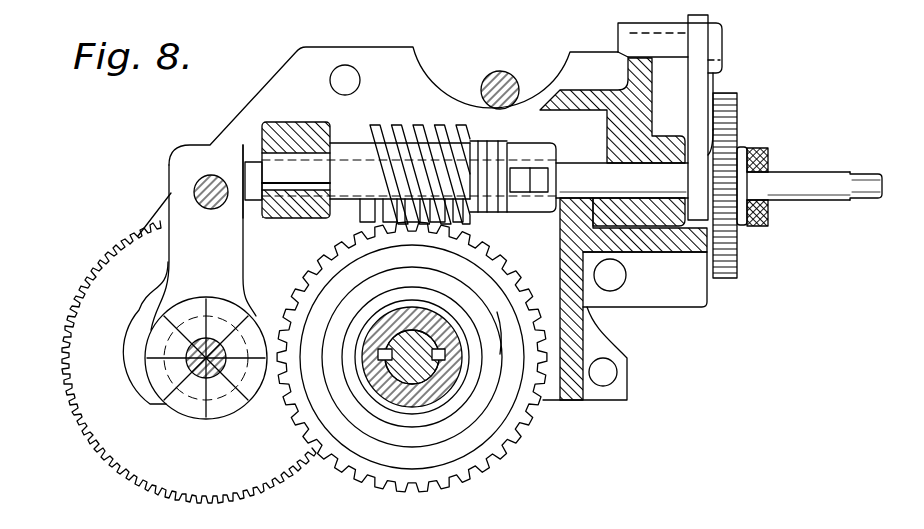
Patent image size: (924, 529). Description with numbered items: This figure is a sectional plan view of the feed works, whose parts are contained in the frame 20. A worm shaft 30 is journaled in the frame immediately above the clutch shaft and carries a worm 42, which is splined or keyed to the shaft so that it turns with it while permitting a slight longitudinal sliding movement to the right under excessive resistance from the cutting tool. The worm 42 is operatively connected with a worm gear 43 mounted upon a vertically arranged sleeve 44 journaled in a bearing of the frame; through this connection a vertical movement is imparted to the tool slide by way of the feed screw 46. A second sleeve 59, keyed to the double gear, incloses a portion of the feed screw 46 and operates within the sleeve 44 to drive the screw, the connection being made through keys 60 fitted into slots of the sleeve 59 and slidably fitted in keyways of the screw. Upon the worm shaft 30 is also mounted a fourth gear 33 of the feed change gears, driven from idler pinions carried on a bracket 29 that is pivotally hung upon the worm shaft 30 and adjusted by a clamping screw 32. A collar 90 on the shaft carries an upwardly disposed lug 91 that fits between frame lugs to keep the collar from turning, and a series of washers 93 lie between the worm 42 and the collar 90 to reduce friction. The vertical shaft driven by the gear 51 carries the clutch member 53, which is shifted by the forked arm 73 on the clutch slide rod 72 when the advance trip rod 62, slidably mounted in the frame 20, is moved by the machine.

The frame 20 is at (425, 223).
The bracket 29 is at (700, 90).
The worm shaft 30 is at (563, 186).
The clamping screw 32 is at (715, 42).
The fourth gear 33 is at (730, 256).
The worm 42 is at (399, 125).
The worm gear 43 is at (530, 420).
The sleeve 44 is at (445, 392).
The feed screw 46 is at (425, 315).
The gear 51 is at (189, 362).
The lower clutch member 53 is at (185, 412).
The sleeve 59 is at (400, 387).
The keys 60 is at (452, 374).
The advance trip rod 62 is at (491, 74).
The clutch slide rod 72 is at (211, 200).
The forked arm 73 is at (206, 282).
The collar 90 is at (537, 152).
The lug 91 is at (522, 184).
The washers 93 is at (490, 143).